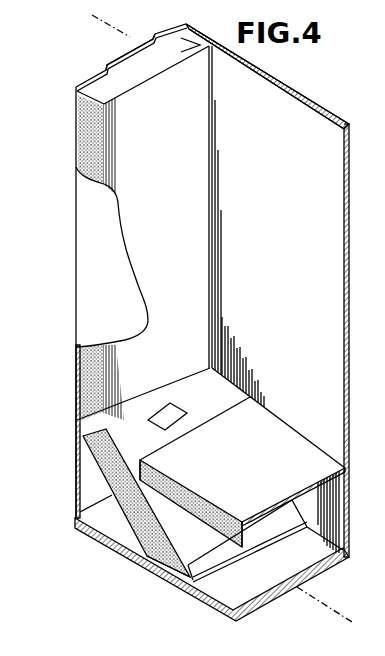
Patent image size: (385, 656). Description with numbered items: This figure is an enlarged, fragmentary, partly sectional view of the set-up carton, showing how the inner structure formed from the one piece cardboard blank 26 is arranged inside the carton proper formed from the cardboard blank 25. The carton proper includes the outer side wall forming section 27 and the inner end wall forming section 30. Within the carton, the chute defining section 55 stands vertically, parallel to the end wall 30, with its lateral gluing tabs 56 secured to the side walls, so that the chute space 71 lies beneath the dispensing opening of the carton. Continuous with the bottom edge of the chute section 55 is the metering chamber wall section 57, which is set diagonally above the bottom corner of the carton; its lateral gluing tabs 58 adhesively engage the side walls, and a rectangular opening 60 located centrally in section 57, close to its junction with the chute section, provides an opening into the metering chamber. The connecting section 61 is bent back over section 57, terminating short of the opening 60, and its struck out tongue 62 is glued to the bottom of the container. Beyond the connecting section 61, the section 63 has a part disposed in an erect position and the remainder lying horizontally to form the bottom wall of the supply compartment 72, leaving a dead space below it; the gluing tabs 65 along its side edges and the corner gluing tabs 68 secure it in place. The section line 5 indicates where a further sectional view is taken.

The section line 5- 5 is at (108, 33).
The cardboard blank for the carton proper 25 is at (302, 84).
The one piece cardboard blank 26 is at (126, 132).
The outer side wall forming section 27 is at (325, 133).
The inner end wall forming section 30 is at (75, 105).
The chute defining section 55 is at (187, 138).
The lateral gluing tabs 56 is at (78, 170).
The metering chamber wall section 57 is at (118, 433).
The lateral gluing tabs 58 is at (105, 528).
The rectangular opening 60 is at (180, 411).
The connecting section 61 is at (185, 560).
The struck out tongue 62 is at (210, 596).
The supply compartment bottom section 63 is at (323, 456).
The gluing tabs 65 is at (147, 547).
The corner gluing tabs 68 is at (87, 472).
The chute space 71 is at (172, 42).
The supply compartment 72 is at (83, 481).